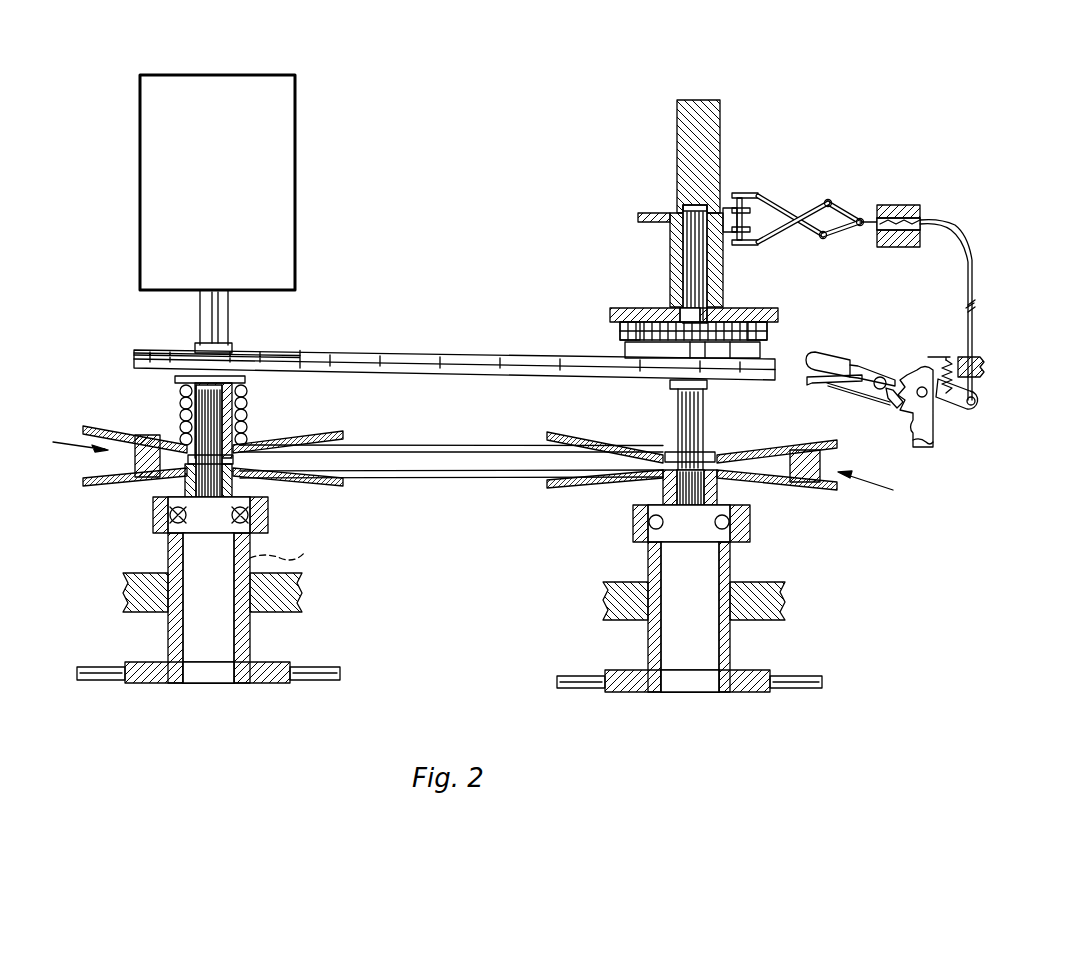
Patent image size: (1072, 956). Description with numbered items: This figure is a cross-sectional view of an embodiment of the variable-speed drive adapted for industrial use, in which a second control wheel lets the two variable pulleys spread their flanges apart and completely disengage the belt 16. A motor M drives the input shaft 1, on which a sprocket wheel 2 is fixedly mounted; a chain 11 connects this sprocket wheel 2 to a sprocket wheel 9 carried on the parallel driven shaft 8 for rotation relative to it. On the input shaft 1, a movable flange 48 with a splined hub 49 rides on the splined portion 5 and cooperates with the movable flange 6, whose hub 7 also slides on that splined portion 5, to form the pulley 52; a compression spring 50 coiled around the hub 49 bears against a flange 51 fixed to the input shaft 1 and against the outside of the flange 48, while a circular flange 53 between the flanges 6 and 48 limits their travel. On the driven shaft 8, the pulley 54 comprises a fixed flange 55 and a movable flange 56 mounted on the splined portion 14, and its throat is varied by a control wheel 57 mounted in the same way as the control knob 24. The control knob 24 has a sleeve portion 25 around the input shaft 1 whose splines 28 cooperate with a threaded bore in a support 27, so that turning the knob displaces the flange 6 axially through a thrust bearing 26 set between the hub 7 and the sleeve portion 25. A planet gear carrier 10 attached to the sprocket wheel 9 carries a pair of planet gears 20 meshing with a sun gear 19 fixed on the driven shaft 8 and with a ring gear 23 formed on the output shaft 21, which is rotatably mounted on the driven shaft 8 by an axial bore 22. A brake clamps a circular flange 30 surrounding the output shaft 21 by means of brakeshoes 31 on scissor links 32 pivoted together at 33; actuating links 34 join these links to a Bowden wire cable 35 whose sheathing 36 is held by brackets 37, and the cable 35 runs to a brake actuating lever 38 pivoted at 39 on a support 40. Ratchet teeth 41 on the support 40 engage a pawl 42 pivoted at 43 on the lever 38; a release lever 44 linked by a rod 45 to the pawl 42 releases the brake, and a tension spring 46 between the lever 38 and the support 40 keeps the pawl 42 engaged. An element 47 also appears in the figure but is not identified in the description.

The input shaft 1 is at (213, 330).
The sprocket wheel 2 is at (262, 351).
The splined portion 5 is at (205, 660).
The second flange 6 is at (138, 487).
The hub 7 is at (255, 492).
The driven shaft 8 is at (683, 252).
The sprocket wheel 9 is at (725, 384).
The planet gear carrier 10 is at (628, 351).
The chain 11 is at (345, 350).
The splined portion 14 is at (690, 668).
The belt 16 is at (415, 455).
The sun gear 19 is at (640, 322).
The planet gears 20 is at (622, 334).
The output shaft 21 is at (720, 115).
The axial bore 22 is at (683, 210).
The ring gear 23 is at (615, 308).
The control knob 24 is at (285, 668).
The sleeve portion 25 is at (158, 525).
The thrust bearing 26 is at (262, 512).
The support 27 is at (300, 612).
The splines 28 is at (290, 554).
The circular flange 30 is at (640, 215).
The brakeshoes 31 is at (760, 200).
The scissor links 32 is at (790, 235).
The pivot 33 is at (800, 212).
The actuating links 34 is at (832, 203).
The Bowden wire cable 35 is at (975, 258).
The sheathing 36 is at (935, 198).
The brackets 37 is at (895, 205).
The brake actuating lever 38 is at (855, 362).
The pivot 39 is at (944, 354).
The support 40 is at (915, 446).
The ratchet teeth 41 is at (913, 420).
The pawl 42 is at (888, 400).
The pivot 43 is at (876, 389).
The release lever 44 is at (808, 384).
The rod 45 is at (842, 392).
The tension spring 46 is at (958, 410).
The lever end 47 is at (812, 355).
The movable flange 48 is at (130, 430).
The hub 49 is at (180, 428).
The compression spring 50 is at (250, 407).
The flange 51 is at (245, 380).
The pulley 52 is at (68, 438).
The circular flange 53 is at (240, 462).
The pulley 54 is at (875, 486).
The fixed flange 55 is at (605, 440).
The movable flange 56 is at (610, 486).
The control wheel 57 is at (740, 690).